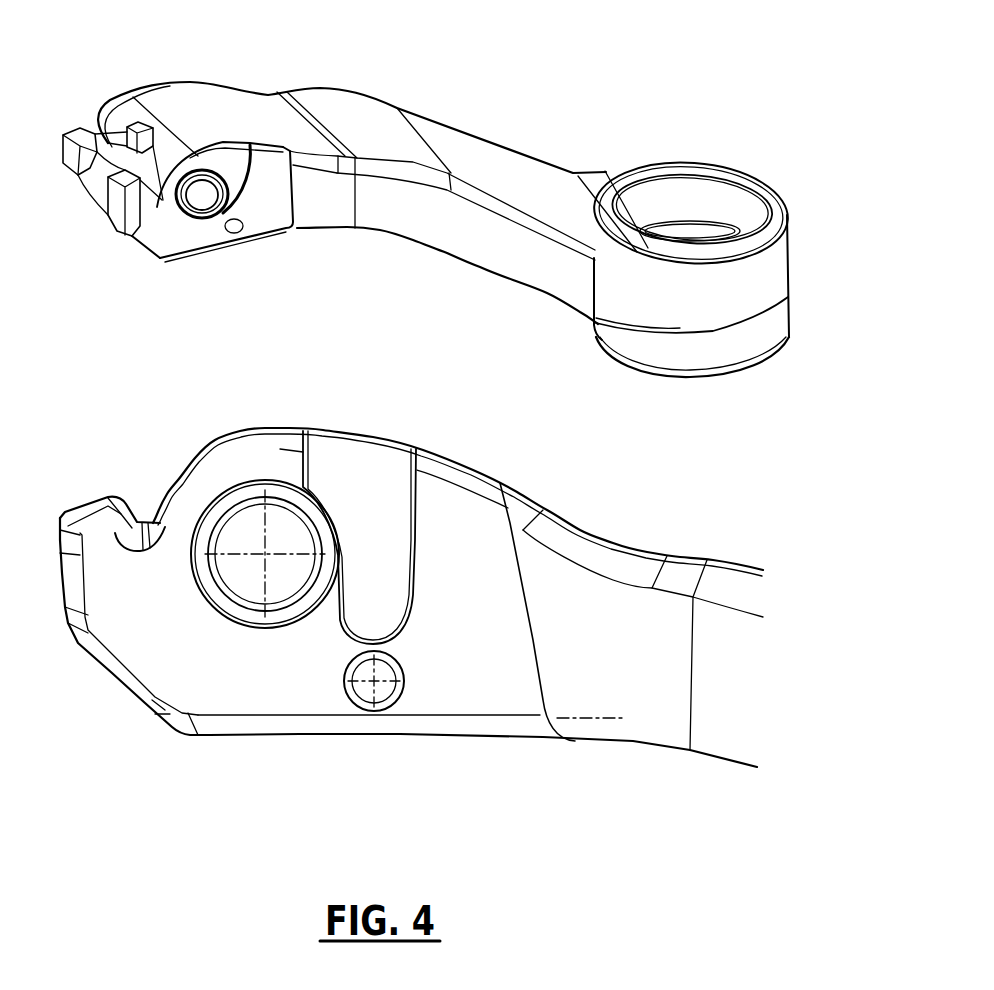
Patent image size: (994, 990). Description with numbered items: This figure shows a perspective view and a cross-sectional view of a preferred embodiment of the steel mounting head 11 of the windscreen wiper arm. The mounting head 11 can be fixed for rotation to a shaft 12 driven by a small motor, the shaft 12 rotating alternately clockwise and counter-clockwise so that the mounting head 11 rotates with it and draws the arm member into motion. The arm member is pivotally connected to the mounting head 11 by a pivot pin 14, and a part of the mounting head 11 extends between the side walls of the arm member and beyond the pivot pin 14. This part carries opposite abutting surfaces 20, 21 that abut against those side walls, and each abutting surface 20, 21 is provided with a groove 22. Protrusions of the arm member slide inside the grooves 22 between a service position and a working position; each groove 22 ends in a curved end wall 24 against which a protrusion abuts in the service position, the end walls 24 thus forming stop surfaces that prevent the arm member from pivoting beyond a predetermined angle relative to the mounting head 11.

The mounting head 11 is at (476, 93).
The shaft 12 is at (686, 380).
The pivot pin 14 is at (253, 580).
The abutting surface 20 is at (183, 237).
The abutting surface 21 is at (126, 91).
The groove 22 is at (231, 154).
The curved end wall 24 is at (358, 646).